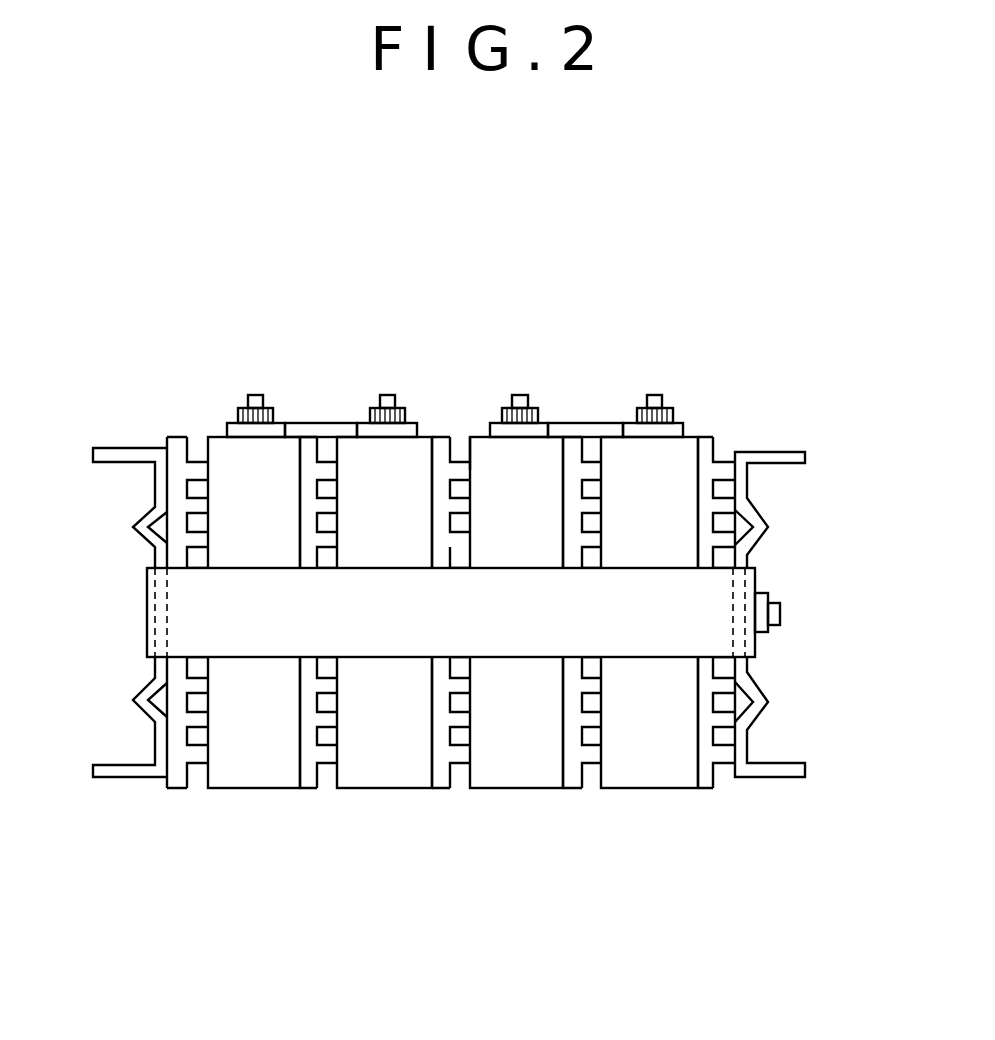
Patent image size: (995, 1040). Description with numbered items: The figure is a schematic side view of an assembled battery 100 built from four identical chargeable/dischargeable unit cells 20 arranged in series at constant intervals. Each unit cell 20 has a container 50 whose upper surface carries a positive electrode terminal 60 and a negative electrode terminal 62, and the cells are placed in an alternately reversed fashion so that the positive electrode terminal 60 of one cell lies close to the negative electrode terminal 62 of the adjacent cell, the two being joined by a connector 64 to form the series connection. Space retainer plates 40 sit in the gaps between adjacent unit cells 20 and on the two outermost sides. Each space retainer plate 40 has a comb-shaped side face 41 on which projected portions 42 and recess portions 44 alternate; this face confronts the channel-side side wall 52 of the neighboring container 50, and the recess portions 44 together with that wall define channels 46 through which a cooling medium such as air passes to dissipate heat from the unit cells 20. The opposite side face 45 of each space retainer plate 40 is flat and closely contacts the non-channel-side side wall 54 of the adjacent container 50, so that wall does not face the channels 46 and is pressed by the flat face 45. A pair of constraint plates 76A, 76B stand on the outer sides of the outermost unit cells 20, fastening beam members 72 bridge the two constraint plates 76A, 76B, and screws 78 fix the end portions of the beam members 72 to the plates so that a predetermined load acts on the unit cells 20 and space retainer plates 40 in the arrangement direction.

The assembled battery 100 is at (782, 298).
The unit cell 20 is at (436, 668).
The container 50 is at (215, 790).
The space retainer plate 40 is at (439, 592).
The side face 41 is at (439, 592).
The projected portion 42 is at (472, 470).
The recess portion 44 is at (472, 491).
The flat face 45 is at (430, 463).
The channel 46 is at (453, 525).
The channel-side side wall 52 is at (458, 768).
The non-channel-side side wall 54 is at (452, 717).
The positive electrode terminal 60 is at (255, 393).
The negative electrode terminal 62 is at (386, 393).
The connector 64 is at (312, 430).
The fastening beam member 72 is at (177, 620).
The constraint plate 76A is at (785, 763).
The constraint plate 76B is at (103, 765).
The screw 78 is at (782, 612).